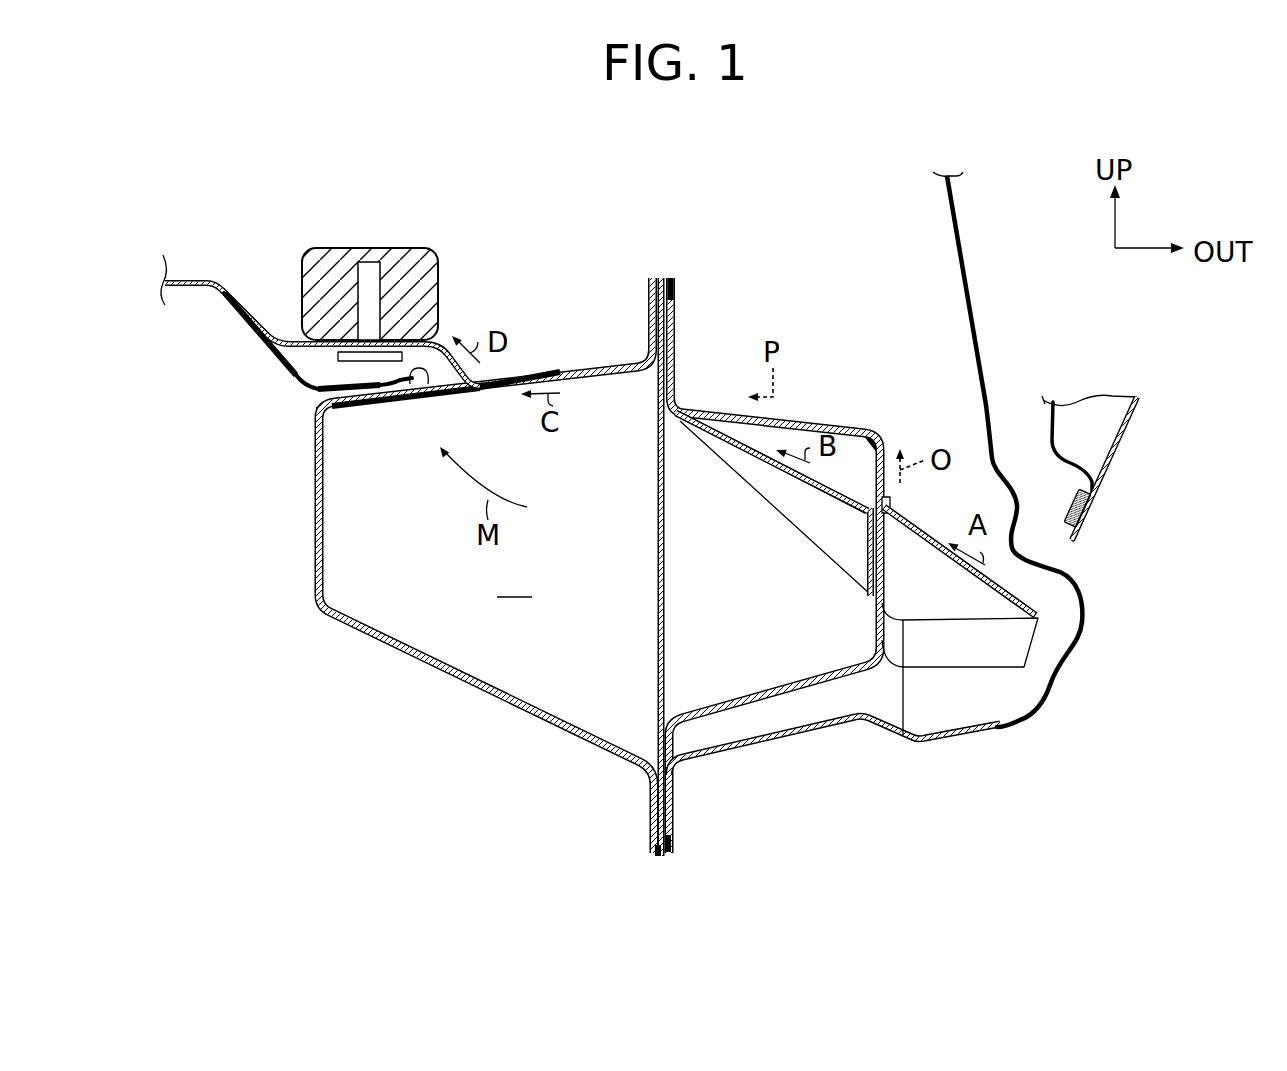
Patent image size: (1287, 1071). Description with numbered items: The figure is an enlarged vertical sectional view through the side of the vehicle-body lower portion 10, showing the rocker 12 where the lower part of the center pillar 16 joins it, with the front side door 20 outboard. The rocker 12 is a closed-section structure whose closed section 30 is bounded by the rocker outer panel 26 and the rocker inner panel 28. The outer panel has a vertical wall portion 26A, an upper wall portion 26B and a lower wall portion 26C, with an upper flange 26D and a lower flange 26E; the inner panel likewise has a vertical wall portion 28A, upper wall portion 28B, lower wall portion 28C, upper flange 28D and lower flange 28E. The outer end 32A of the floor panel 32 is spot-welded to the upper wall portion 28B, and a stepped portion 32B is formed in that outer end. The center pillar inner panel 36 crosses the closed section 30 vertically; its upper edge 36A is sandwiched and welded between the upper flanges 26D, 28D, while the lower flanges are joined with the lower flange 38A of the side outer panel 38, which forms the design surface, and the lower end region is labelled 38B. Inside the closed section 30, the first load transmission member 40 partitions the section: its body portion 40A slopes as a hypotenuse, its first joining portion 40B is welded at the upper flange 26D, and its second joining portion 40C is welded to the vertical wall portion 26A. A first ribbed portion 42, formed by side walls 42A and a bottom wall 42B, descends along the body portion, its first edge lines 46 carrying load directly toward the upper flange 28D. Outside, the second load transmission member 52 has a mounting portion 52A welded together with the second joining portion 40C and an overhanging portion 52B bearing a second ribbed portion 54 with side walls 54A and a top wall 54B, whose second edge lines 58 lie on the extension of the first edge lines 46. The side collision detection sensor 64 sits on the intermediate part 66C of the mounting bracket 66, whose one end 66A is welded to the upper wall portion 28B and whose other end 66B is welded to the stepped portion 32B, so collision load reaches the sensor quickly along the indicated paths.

The vehicle-body lower portion 10 is at (1082, 472).
The rocker 12 is at (498, 760).
The center pillar 16 is at (663, 247).
The front side door 20 is at (1128, 418).
The rocker outer panel 26 is at (842, 565).
The vertical wall portion 26A is at (842, 756).
The upper wall portion 26B is at (835, 428).
The lower wall portion 26C is at (771, 697).
The upper flange 26D is at (676, 302).
The lower flange 26E is at (673, 806).
The rocker inner panel 28 is at (439, 558).
The vertical wall portion 28A is at (313, 500).
The upper wall portion 28B is at (603, 362).
The lower wall portion 28C is at (473, 689).
The upper flange 28D is at (648, 296).
The lower flange 28E is at (650, 806).
The closed section 30 is at (515, 580).
The floor panel 32 is at (329, 318).
The outer end of floor panel 32A is at (418, 384).
The stepped portion 32B is at (238, 330).
The center pillar inner panel 36 is at (635, 527).
The upper edge 36A is at (658, 278).
The side outer panel 38 is at (974, 287).
The lower flange 38A is at (672, 840).
The lower end of side panel 38B is at (657, 855).
The first load transmission member 40 is at (771, 432).
The body portion 40A is at (827, 537).
The first joining portion 40B is at (667, 278).
The second joining portion 40C is at (867, 556).
The first ribbed portion 42 is at (770, 517).
The side walls 42A is at (787, 488).
The bottom wall 42B is at (755, 488).
The first edge lines 46 is at (878, 438).
The second load transmission member 52 is at (1003, 675).
The mounting portion 52A is at (891, 506).
The overhanging portion 52B is at (988, 728).
The second ribbed portion 54 is at (1054, 621).
The side walls 54A is at (1032, 645).
The top wall 54B is at (1013, 596).
The second edge lines 58 is at (1040, 563).
The side collision detection sensor 64 is at (398, 247).
The mounting bracket 66 is at (377, 319).
The one end 66A is at (523, 366).
The other end 66B is at (225, 292).
The intermediate part 66C is at (297, 380).